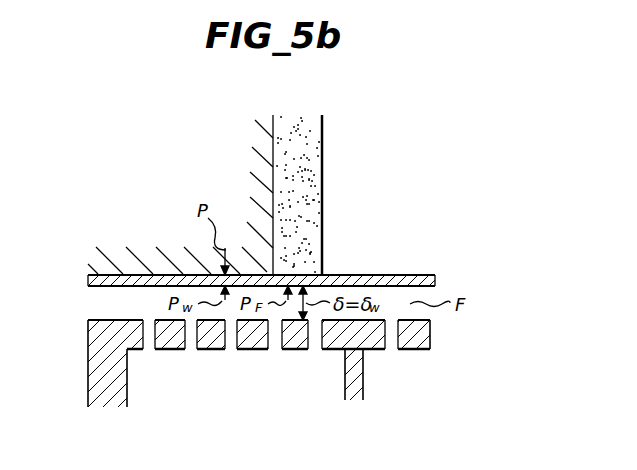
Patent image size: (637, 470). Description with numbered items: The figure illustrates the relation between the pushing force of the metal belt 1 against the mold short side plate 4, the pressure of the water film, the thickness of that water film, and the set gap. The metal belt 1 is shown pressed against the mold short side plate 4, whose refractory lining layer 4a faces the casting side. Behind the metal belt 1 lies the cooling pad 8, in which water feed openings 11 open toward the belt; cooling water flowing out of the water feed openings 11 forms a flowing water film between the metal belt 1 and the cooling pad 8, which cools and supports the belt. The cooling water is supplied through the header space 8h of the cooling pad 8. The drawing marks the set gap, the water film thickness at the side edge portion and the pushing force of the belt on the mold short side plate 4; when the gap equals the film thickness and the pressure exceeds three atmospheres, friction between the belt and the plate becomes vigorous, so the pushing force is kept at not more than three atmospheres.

The metal belt 1 is at (352, 275).
The mold short side plate 4 is at (295, 195).
The refractory lining layer 4a is at (314, 155).
The cooling pad 8 is at (234, 384).
The header space 8h is at (147, 380).
The water feed openings 11 is at (148, 350).